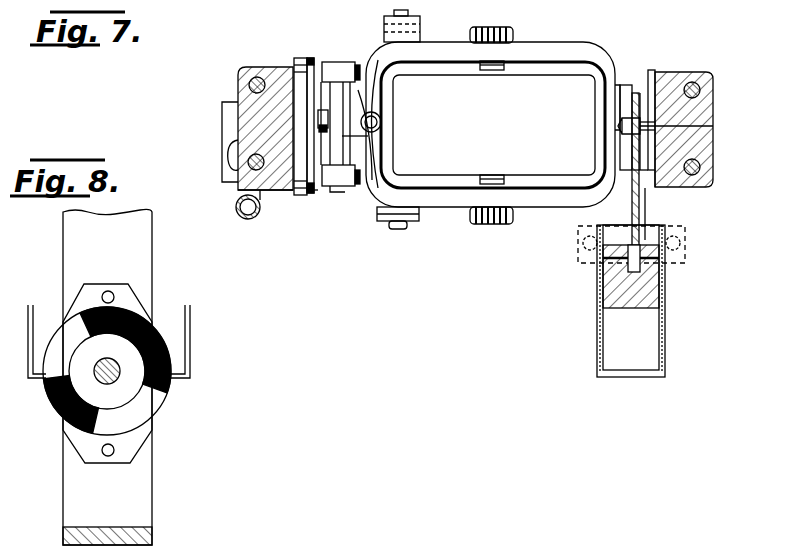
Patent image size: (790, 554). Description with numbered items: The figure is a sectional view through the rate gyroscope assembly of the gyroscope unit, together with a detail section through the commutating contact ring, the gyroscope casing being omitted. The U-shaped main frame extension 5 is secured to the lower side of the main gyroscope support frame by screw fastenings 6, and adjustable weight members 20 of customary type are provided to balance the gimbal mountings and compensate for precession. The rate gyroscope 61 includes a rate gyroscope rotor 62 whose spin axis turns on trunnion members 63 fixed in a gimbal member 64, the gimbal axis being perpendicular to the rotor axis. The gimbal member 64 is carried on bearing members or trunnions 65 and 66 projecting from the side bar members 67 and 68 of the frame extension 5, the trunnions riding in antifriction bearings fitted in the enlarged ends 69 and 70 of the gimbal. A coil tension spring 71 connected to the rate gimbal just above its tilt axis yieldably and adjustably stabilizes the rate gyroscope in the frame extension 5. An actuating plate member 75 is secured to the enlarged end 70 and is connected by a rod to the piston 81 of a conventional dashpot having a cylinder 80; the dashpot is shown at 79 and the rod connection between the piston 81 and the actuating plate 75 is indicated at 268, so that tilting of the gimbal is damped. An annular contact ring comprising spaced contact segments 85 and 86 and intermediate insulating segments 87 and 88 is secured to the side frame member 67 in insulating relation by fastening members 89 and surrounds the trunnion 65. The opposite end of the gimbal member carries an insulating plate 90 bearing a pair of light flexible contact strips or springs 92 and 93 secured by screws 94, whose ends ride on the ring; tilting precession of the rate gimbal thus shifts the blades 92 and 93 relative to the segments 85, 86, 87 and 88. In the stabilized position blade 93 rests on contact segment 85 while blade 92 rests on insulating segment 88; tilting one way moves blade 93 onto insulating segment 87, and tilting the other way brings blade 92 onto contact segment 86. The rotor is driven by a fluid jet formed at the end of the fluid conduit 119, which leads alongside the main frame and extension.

In FIG. 7, the main frame extension 5 is at (278, 80).
In FIG. 8, the main frame extension 5 is at (155, 252).
In FIG. 7, the screw fastenings 6 is at (238, 86).
In FIG. 7, the adjustable weight members 20 is at (424, 18).
In FIG. 7, the rate gyroscope 61 is at (490, 113).
In FIG. 7, the rate gyroscope rotor 62 is at (494, 125).
In FIG. 7, the trunnion members 63 is at (504, 63).
In FIG. 7, the gimbal member 64 is at (576, 54).
In FIG. 7, the bearing member or trunnion 65 is at (325, 112).
In FIG. 7, the bearing member or trunnion 66 is at (713, 126).
In FIG. 7, the side bar member 67 is at (284, 192).
In FIG. 8, the side bar member 67 is at (140, 502).
In FIG. 7, the side bar member 68 is at (666, 188).
In FIG. 7, the enlarged end 69 is at (372, 150).
In FIG. 7, the enlarged end 70 is at (620, 85).
In FIG. 7, the coil tension spring 71 is at (380, 118).
In FIG. 7, the actuating plate member 75 is at (650, 78).
In FIG. 7, the cylinder 79 is at (665, 348).
In FIG. 7, the cylinder 80 is at (600, 344).
In FIG. 7, the piston 81 is at (606, 284).
In FIG. 8, the contact segment 85 is at (54, 378).
In FIG. 8, the contact segment 86 is at (150, 412).
In FIG. 8, the insulating segment 87 is at (56, 410).
In FIG. 7, the insulating segment 88 is at (314, 60).
In FIG. 8, the insulating segment 88 is at (172, 386).
In FIG. 7, the fastening members 89 is at (312, 194).
In FIG. 8, the fastening members 89 is at (114, 297).
In FIG. 7, the insulating plate 90 is at (368, 136).
In FIG. 7, the contact strip or spring 92 is at (328, 62).
In FIG. 8, the contact strip or spring 92 is at (190, 318).
In FIG. 7, the contact strip or spring 93 is at (338, 186).
In FIG. 8, the contact strip or spring 93 is at (53, 316).
In FIG. 7, the screws 94 is at (382, 74).
In FIG. 7, the fluid conduit 119 is at (250, 220).
In FIG. 7, the piston rod 268 is at (642, 208).